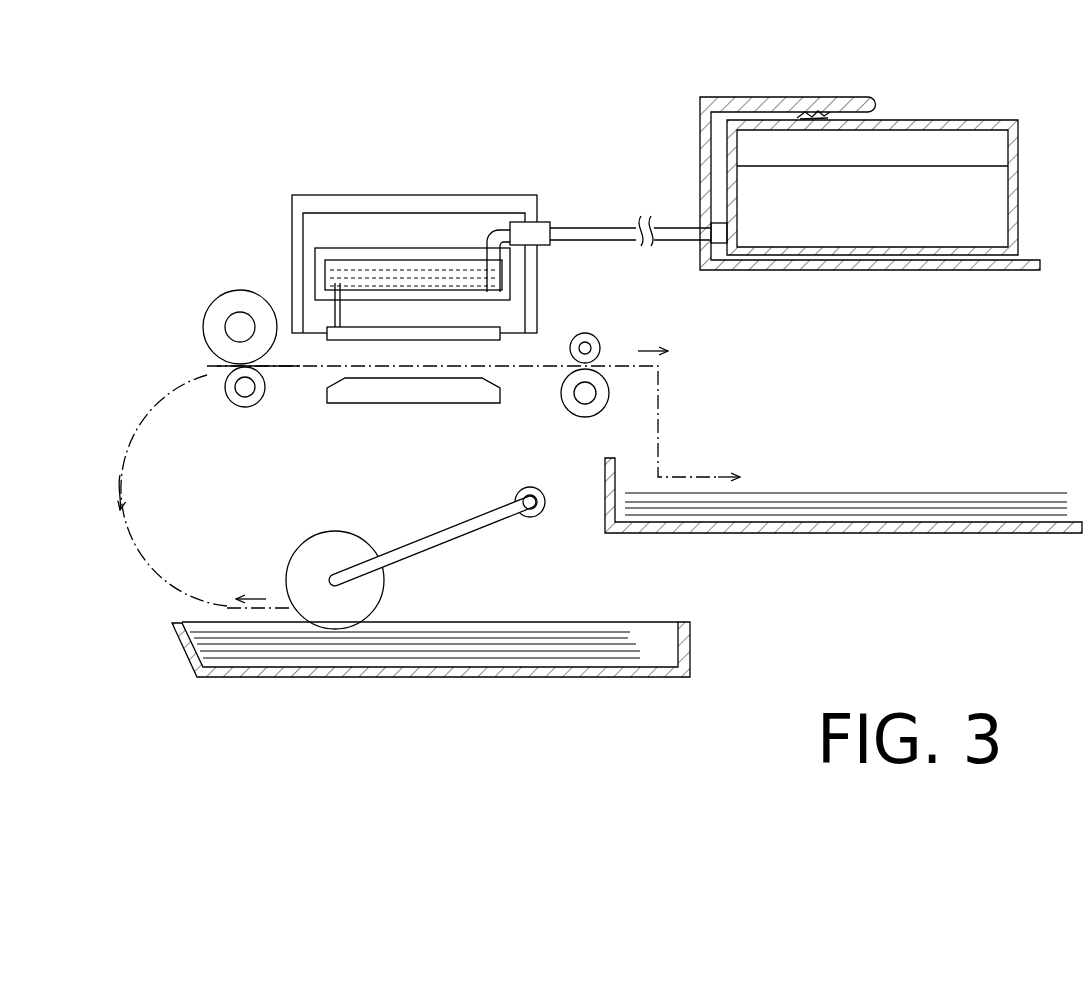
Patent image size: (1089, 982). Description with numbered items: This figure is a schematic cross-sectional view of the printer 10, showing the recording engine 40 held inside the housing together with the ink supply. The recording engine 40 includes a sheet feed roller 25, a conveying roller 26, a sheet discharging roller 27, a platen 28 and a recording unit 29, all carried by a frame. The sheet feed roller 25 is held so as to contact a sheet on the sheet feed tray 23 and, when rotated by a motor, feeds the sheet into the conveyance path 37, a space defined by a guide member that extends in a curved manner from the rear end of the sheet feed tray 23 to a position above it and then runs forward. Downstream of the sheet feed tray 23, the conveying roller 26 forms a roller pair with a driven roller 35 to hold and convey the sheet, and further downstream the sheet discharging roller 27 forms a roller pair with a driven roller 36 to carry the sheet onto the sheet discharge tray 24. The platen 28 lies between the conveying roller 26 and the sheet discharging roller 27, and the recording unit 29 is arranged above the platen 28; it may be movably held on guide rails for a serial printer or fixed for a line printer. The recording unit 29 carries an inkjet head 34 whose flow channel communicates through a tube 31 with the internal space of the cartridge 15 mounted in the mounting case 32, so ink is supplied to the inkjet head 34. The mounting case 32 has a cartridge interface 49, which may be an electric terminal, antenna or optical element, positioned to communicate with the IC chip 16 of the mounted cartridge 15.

The printer 10 is at (215, 178).
The cartridge 15 is at (929, 119).
The IC chip 16 is at (802, 118).
The sheet feed tray 23 is at (630, 621).
The sheet discharge tray 24 is at (797, 535).
The sheet feed roller 25 is at (336, 531).
The conveying roller 26 is at (238, 289).
The sheet discharging roller 27 is at (583, 418).
The platen 28 is at (385, 405).
The recording unit 29 is at (352, 172).
The tube 31 is at (593, 225).
The mounting case 32 is at (762, 95).
The inkjet head 34 is at (490, 346).
The driven roller 35 is at (245, 408).
The driven roller 36 is at (596, 333).
The conveyance path 37 is at (168, 400).
The recording engine 40 is at (153, 281).
The cartridge interface 49 is at (830, 113).